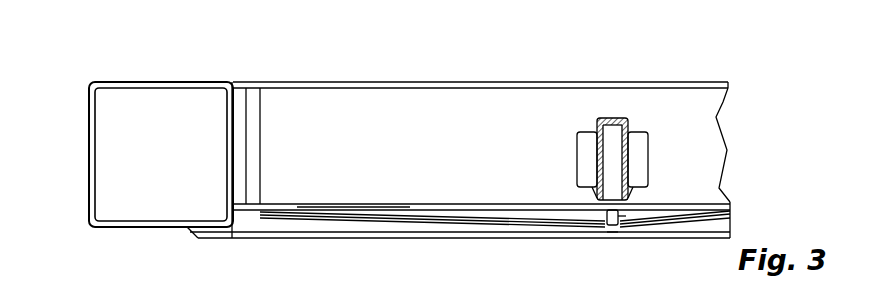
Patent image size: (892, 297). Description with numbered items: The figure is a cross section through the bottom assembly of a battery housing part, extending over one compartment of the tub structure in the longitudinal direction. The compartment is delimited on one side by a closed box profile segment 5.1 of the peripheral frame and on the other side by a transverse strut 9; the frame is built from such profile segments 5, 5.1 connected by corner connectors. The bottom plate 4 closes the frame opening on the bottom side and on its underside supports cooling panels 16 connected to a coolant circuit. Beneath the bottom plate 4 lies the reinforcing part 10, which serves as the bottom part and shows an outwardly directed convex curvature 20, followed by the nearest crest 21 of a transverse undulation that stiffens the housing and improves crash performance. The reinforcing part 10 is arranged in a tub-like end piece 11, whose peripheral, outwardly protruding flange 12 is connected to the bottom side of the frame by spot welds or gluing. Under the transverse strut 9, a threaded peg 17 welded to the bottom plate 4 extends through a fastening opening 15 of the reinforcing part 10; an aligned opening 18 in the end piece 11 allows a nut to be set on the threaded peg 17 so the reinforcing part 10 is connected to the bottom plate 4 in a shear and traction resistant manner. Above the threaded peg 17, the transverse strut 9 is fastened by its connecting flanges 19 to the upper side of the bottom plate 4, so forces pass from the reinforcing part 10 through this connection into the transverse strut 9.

The profile segment 5 is at (477, 130).
The profile segment 5.1 is at (149, 79).
The upper bottom plate 4 is at (286, 201).
The transverse strut 9 is at (613, 114).
The reinforcing part 10 is at (311, 223).
The end piece 11 is at (314, 237).
The flange 12 is at (175, 235).
The fastening opening 15 is at (606, 223).
The cooling panel 16 is at (452, 204).
The threaded peg 17 is at (624, 221).
The opening 18 is at (618, 237).
The connecting flange 19 is at (589, 197).
The curvature 20 is at (395, 226).
The crest 21 is at (450, 233).